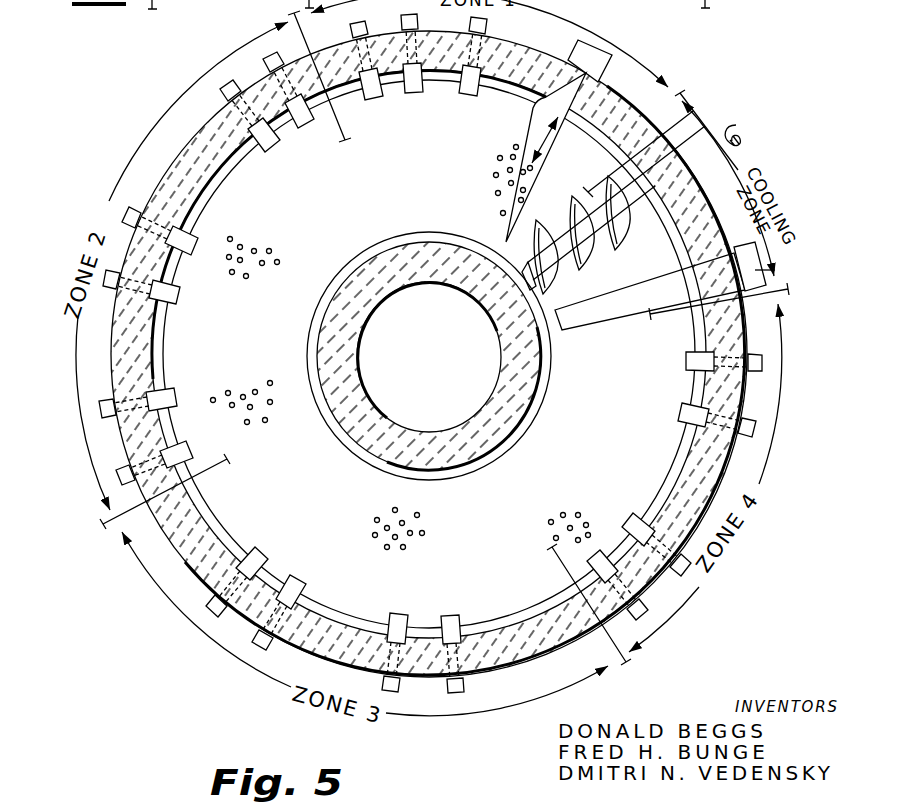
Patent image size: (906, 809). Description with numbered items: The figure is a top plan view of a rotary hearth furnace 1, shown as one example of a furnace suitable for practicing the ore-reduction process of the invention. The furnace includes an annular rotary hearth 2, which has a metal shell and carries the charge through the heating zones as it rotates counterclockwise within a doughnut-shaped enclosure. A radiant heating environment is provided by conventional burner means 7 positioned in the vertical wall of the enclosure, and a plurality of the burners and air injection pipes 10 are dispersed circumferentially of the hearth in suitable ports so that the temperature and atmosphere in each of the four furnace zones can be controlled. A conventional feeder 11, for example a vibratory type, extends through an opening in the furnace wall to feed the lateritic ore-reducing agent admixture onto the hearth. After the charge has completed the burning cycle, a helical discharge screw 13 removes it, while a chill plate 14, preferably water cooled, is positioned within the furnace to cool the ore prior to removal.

The rotary hearth furnace 1 is at (672, 132).
The annular rotary hearth 2 is at (597, 432).
The burner means 7 is at (389, 375).
The air injection pipes 10 is at (432, 353).
The feeder 11 is at (598, 54).
The helical discharge screw 13 is at (744, 140).
The chill plate 14 is at (773, 266).